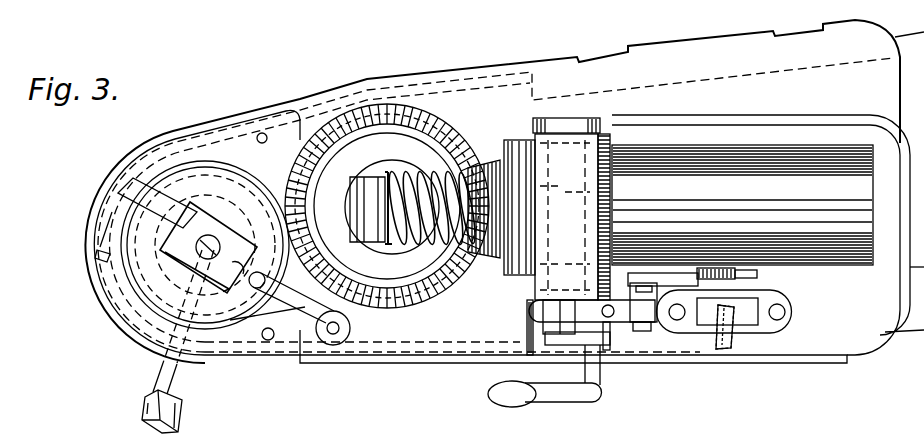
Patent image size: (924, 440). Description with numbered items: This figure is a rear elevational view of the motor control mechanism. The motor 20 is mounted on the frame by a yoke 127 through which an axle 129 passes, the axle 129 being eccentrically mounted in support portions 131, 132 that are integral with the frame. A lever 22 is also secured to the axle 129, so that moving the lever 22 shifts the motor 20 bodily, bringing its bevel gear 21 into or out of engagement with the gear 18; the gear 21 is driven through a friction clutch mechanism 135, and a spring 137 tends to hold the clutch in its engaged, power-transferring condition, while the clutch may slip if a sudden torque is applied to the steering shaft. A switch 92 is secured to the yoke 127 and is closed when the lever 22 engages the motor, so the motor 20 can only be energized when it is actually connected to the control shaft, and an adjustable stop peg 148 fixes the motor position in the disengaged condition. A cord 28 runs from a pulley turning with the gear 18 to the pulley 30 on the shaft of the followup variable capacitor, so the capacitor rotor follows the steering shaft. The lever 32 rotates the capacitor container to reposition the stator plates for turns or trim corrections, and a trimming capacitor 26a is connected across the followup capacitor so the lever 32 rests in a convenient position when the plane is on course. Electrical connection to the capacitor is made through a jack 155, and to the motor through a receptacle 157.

The gear 18 is at (430, 302).
The motor 20 is at (837, 262).
The bevel gear 21 is at (489, 256).
The lever 22 is at (493, 393).
The trimming capacitor 26a is at (206, 218).
The cord 28 is at (352, 310).
The pulley 30 is at (230, 320).
The lever 32 is at (145, 410).
The switch 92 is at (624, 323).
The yoke 127 is at (592, 183).
The axle 129 is at (615, 222).
The support portion 131 is at (556, 121).
The support portion 132 is at (540, 312).
The friction clutch mechanism 135 is at (517, 276).
The spring 137 is at (428, 248).
The adjustable stop peg 148 is at (714, 266).
The jack 155 is at (333, 336).
The receptacle 157 is at (703, 335).